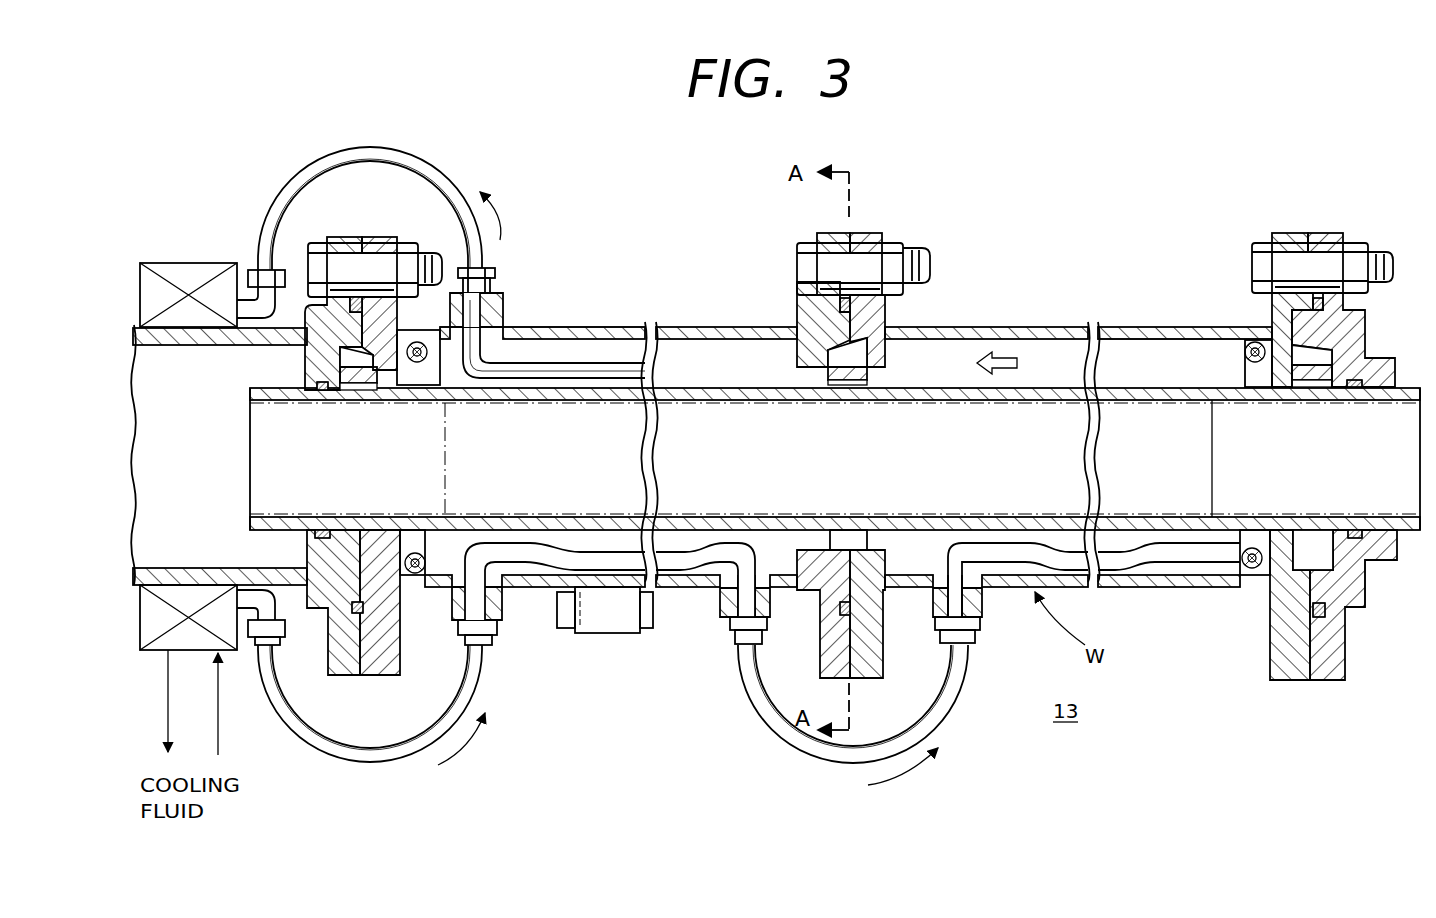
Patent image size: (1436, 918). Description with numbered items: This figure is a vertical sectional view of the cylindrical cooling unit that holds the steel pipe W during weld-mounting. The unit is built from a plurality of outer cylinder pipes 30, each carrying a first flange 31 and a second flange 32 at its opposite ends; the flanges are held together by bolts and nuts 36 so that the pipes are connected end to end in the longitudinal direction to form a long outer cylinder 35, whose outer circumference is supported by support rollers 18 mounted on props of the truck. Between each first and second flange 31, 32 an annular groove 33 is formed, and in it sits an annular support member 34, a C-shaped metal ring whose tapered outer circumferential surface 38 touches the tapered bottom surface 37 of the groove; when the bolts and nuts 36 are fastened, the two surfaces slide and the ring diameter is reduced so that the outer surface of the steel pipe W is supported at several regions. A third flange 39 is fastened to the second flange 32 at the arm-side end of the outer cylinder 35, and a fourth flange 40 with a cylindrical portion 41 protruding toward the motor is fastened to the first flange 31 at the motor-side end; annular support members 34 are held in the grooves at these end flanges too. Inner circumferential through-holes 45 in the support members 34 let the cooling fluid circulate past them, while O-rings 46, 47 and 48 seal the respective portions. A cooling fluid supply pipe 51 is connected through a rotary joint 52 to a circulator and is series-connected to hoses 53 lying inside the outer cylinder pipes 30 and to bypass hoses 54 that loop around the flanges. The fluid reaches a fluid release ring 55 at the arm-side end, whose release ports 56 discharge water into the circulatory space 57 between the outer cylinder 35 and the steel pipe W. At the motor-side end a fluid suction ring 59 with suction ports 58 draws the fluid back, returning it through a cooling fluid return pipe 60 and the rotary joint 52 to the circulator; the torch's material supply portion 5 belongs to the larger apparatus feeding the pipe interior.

The material supply portion 5 is at (740, 517).
The support rollers 18 is at (608, 634).
The outer cylinder pipes 30 is at (700, 325).
The first flange 31 is at (372, 676).
The second flange 32 is at (820, 640).
The annular grooves 33 is at (320, 536).
The annular support members 34 is at (348, 392).
The outer cylinder 35 is at (613, 323).
The bolts and nuts 36 is at (318, 250).
The tapered bottom surface 37 is at (797, 358).
The tapered outer circumferential surface 38 is at (862, 350).
The third flange 39 is at (1345, 665).
The fourth flange 40 is at (330, 650).
The cylindrical portion 41 is at (170, 345).
The inner circumferential through-holes 45 is at (365, 392).
The O-ring 46 is at (350, 305).
The O-ring 47 is at (320, 392).
The O-ring 48 is at (1355, 392).
The cooling fluid supply pipe 51 is at (375, 765).
The rotary joint 52 is at (237, 652).
The hoses 53 is at (598, 548).
The bypass hoses 54 is at (955, 735).
The fluid release ring 55 is at (1245, 372).
The release ports 56 is at (1245, 343).
The circulatory space 57 is at (1052, 345).
The suction ports 58 is at (415, 577).
The fluid suction ring 59 is at (490, 371).
The cooling fluid return pipe 60 is at (437, 158).